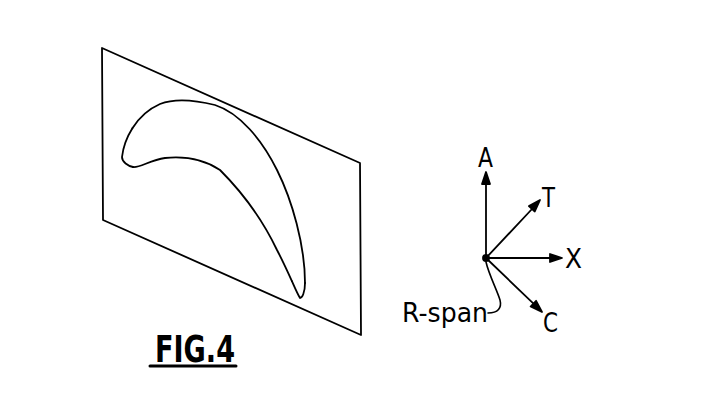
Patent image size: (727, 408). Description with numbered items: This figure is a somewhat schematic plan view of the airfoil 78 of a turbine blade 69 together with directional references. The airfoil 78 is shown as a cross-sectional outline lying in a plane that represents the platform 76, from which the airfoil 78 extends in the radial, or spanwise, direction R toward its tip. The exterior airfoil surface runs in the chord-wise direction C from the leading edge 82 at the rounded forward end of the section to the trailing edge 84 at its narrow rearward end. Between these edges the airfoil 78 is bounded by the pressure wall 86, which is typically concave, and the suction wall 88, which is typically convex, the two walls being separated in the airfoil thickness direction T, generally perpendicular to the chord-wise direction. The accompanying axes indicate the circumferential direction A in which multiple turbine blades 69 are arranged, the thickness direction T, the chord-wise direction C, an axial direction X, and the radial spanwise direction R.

The turbine blade 69 is at (211, 189).
The platform 76 is at (157, 72).
The airfoil 78 is at (185, 216).
The leading edge 82 is at (124, 159).
The trailing edge 84 is at (300, 298).
The pressure wall 86 is at (223, 178).
The suction wall 88 is at (233, 114).